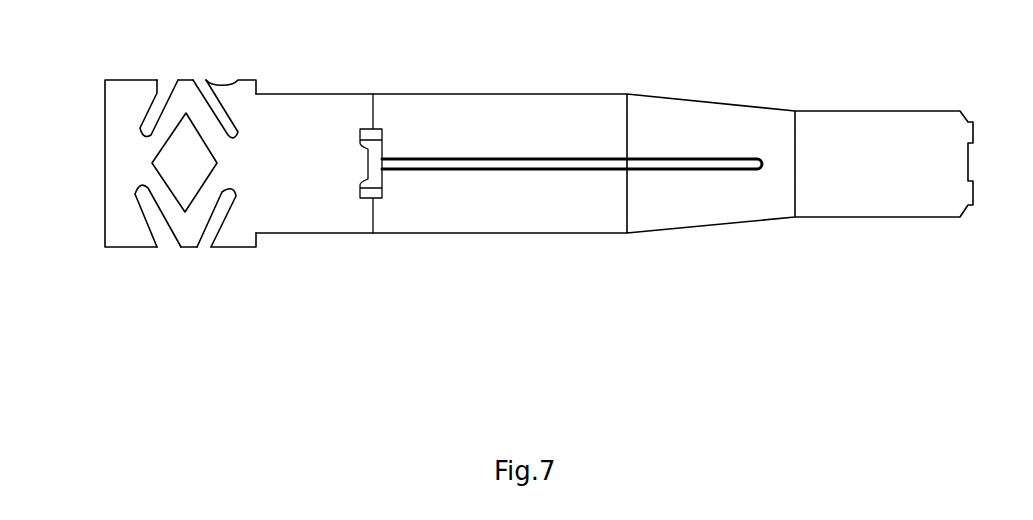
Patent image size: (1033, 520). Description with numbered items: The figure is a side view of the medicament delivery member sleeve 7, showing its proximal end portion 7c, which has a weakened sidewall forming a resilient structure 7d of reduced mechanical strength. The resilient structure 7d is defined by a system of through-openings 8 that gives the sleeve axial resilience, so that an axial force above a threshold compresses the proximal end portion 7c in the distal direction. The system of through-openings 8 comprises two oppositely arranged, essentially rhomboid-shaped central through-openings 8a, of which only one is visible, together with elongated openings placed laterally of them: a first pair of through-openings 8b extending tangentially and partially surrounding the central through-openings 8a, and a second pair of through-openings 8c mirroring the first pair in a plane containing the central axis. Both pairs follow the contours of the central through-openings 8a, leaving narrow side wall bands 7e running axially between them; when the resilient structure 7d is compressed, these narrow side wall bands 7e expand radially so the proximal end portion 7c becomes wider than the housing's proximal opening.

The medicament delivery member sleeve 7 is at (490, 232).
The proximal end portion 7c is at (258, 63).
The resilient structure 7d is at (177, 312).
The narrow side wall bands 7e is at (178, 79).
The system of through-openings 8 is at (123, 163).
The central through-openings 8a is at (168, 168).
The first pair of through-openings 8b is at (220, 110).
The second pair of through-openings 8c is at (157, 220).